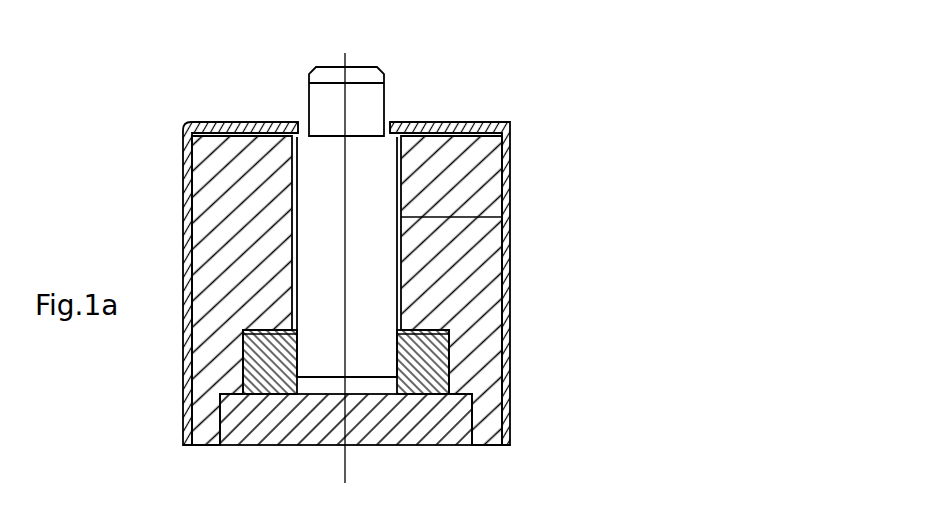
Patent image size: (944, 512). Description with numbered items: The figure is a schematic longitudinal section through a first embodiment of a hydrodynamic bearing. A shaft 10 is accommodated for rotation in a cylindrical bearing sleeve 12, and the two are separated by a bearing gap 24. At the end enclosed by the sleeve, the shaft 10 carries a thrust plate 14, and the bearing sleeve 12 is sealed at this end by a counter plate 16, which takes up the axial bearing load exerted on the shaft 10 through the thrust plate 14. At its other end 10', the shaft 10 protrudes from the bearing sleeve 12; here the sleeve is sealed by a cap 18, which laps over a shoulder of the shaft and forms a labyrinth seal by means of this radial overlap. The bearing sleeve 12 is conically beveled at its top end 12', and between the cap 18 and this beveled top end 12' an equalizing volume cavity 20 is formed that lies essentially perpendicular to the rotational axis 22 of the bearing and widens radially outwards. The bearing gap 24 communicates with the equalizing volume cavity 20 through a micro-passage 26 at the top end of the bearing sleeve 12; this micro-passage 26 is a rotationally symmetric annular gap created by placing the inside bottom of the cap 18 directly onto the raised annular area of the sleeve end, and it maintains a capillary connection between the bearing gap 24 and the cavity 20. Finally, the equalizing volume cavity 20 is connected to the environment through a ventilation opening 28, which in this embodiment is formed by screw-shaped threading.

The other end of the shaft 10' is at (345, 74).
The shaft 10 is at (446, 257).
The bearing sleeve 12 is at (393, 290).
The beveled top end of the bearing sleeve 12' is at (375, 228).
The thrust plate 14 is at (443, 380).
The counter plate 16 is at (430, 427).
The cap 18 is at (503, 255).
The equalizing volume cavity 20 is at (475, 128).
The rotational axis 22 is at (347, 458).
The bearing gap 24 is at (503, 217).
The micro-passage 26 is at (420, 128).
The ventilation opening 28 is at (504, 172).